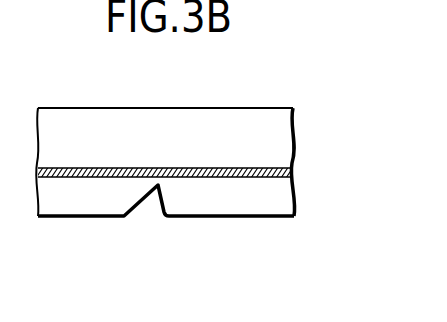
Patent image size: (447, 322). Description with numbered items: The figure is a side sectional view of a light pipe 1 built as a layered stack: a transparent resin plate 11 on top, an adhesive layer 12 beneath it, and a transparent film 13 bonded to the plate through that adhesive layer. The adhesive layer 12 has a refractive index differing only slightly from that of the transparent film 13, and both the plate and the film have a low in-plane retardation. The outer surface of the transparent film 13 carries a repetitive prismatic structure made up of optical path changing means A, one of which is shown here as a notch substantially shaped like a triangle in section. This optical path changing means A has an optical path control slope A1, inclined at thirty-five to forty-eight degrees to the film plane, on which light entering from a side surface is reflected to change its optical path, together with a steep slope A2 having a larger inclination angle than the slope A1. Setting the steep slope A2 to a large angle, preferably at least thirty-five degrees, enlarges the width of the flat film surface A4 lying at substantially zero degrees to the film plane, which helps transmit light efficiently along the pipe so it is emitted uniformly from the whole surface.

The light pipe 1 is at (200, 167).
The transparent resin plate 11 is at (287, 134).
The adhesive layer 12 is at (289, 169).
The transparent film 13 is at (287, 201).
The optical path changing means A is at (152, 209).
The optical path control slope A1 is at (140, 215).
The steep slope A2 is at (165, 216).
The film surface A4 is at (252, 218).